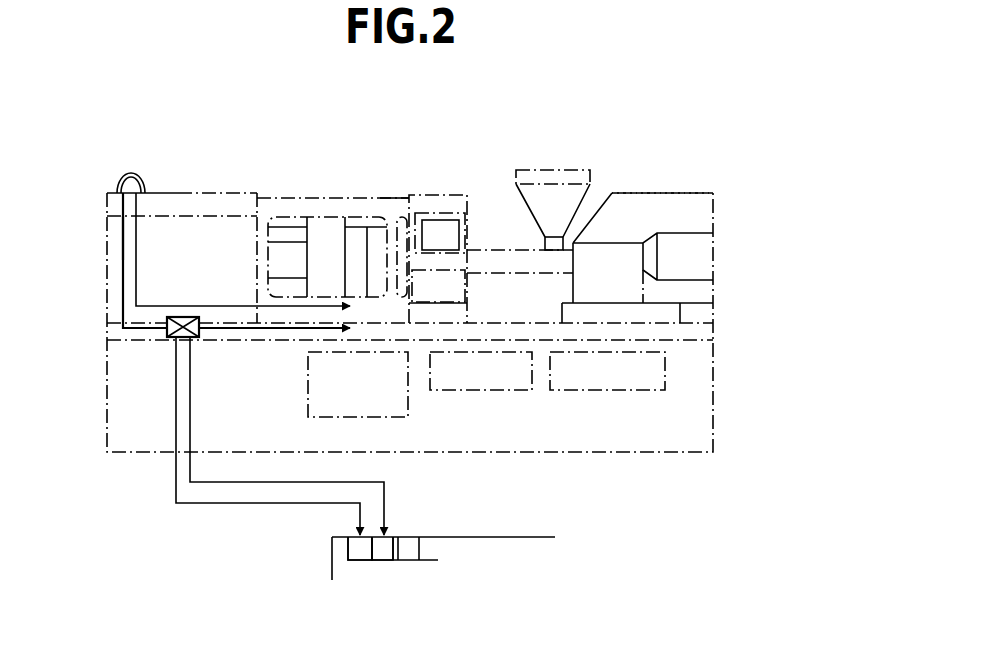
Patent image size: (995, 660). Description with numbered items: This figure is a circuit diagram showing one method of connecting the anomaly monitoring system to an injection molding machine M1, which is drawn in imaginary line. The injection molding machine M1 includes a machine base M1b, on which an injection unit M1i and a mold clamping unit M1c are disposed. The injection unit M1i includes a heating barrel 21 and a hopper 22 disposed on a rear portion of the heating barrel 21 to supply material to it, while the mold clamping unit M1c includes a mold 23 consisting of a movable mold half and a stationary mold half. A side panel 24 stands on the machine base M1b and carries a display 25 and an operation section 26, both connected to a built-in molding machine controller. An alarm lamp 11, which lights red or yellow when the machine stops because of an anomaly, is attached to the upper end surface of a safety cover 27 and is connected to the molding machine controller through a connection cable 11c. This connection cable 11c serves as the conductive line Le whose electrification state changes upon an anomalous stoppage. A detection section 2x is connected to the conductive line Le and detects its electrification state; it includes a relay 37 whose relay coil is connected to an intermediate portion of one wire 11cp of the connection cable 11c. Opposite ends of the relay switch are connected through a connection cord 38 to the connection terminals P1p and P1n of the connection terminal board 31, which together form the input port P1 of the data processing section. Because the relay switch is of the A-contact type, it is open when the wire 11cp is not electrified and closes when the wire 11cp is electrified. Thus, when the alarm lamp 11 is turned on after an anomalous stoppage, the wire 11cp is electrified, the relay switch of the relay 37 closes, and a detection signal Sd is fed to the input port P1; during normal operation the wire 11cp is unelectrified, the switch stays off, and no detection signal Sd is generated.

The injection molding machine M1 is at (593, 140).
The mold clamping unit M1c is at (290, 185).
The injection unit M1i is at (655, 193).
The machine base M1b is at (688, 455).
The alarm lamp 11 is at (128, 172).
The connection cable 11c is at (122, 265).
The wire of connection cable 11cp is at (122, 247).
The conductive line Le is at (110, 288).
The safety cover 27 is at (176, 193).
The mold 23 is at (359, 216).
The side panel 24 is at (422, 195).
The display 25 is at (450, 213).
The operation section 26 is at (463, 287).
The heating barrel 21 is at (487, 250).
The hopper 22 is at (545, 170).
The relay 37 is at (199, 337).
The connection cord 38 is at (163, 475).
The detection signal Sd is at (205, 505).
The detection section 2x is at (160, 348).
The connection terminal board 31 is at (530, 537).
The input port P1 is at (370, 572).
The connection terminal P1p is at (348, 548).
The connection terminal P1n is at (385, 562).